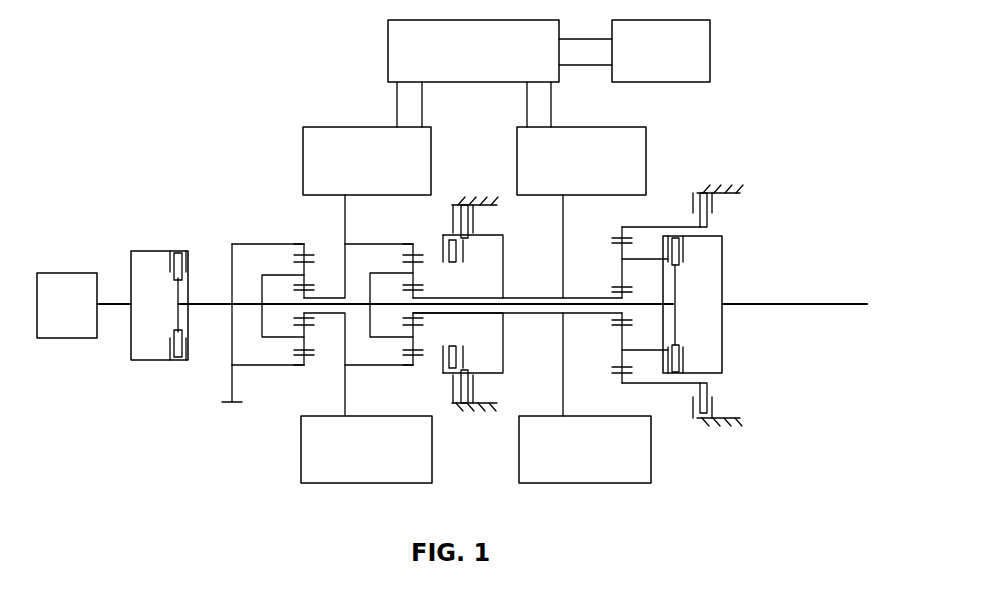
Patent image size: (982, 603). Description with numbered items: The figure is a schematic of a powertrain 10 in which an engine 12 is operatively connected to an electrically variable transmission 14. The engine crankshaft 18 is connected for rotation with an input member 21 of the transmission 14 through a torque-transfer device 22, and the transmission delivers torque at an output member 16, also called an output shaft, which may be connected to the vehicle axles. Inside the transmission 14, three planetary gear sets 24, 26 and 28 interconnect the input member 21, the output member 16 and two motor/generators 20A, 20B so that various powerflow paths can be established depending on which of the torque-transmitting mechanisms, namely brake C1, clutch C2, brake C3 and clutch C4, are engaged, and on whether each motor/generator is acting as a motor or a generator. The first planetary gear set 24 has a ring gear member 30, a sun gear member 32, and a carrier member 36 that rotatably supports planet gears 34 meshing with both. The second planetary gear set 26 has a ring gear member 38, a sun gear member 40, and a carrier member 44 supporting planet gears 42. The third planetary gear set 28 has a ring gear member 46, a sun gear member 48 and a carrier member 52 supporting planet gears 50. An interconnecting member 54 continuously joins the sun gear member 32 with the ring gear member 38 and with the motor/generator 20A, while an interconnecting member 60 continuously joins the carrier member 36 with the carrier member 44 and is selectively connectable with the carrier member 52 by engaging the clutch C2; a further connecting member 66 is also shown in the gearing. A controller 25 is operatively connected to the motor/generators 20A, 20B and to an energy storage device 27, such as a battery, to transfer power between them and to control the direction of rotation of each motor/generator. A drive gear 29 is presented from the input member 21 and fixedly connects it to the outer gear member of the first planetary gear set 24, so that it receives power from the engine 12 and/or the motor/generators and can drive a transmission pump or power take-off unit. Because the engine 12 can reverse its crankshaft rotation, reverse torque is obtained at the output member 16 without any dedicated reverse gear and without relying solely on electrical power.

The powertrain 10 is at (205, 102).
The engine 12 is at (73, 314).
The electrically variable transmission 14 is at (262, 168).
The output member 16 is at (830, 303).
The engine crankshaft 18 is at (116, 303).
The motor/generator 20A is at (388, 171).
The motor/generator 20B is at (603, 171).
The input member 21 is at (203, 303).
The torque-transfer device 22 is at (157, 232).
The first planetary gear set 24 is at (288, 237).
The controller 25 is at (485, 61).
The second planetary gear set 26 is at (402, 238).
The energy storage device 27 is at (673, 61).
The third planetary gear set 28 is at (615, 221).
The drive gear 29 is at (232, 346).
The ring gear member 30 is at (305, 251).
The sun gear member 32 is at (300, 292).
The planet gears 34 is at (303, 268).
The carrier member 36 is at (262, 326).
The ring gear member 38 is at (415, 252).
The sun gear member 40 is at (415, 296).
The planet gears 42 is at (413, 268).
The carrier member 44 is at (370, 325).
The ring gear member 46 is at (617, 243).
The sun gear member 48 is at (617, 292).
The planet gears 50 is at (617, 257).
The carrier member 52 is at (723, 262).
The interconnecting member 54 is at (346, 296).
The interconnecting member 60 is at (539, 314).
The interconnecting member 66 is at (523, 297).
The brake C1 is at (681, 195).
The clutch C2 is at (683, 266).
The brake C3 is at (482, 228).
The clutch C4 is at (474, 360).